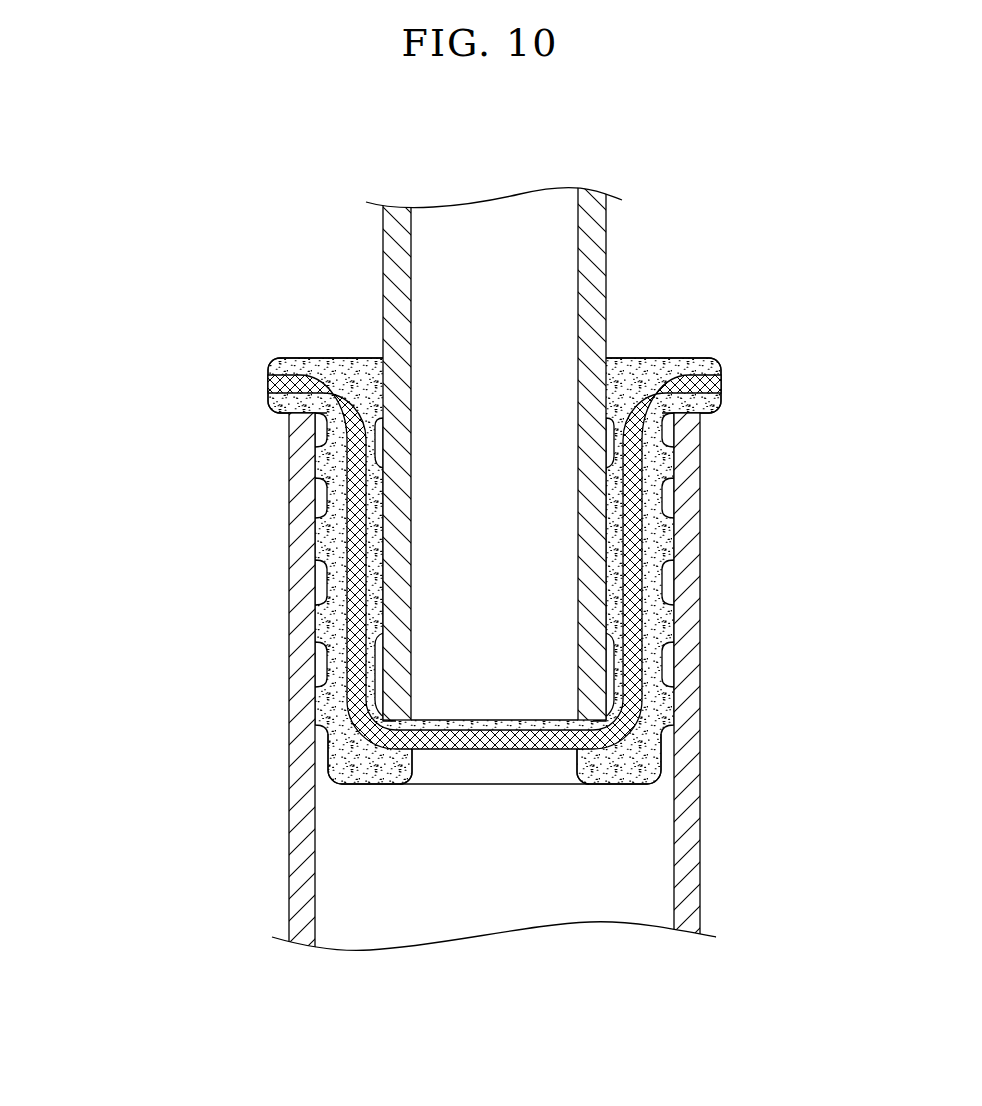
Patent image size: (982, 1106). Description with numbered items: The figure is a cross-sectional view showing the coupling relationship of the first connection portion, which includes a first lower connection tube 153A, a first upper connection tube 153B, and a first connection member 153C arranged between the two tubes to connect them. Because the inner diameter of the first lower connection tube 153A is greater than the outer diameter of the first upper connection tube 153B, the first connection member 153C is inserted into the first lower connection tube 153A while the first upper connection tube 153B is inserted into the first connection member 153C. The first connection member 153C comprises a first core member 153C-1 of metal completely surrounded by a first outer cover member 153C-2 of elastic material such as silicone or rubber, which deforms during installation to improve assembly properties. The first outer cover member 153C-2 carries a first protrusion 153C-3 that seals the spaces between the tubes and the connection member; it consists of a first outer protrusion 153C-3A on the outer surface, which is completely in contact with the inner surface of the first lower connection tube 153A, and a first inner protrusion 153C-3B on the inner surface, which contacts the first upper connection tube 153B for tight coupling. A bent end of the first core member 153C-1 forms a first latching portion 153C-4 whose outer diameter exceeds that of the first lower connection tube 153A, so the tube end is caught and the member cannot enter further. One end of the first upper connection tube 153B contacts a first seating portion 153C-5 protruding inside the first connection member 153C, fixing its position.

The first lower connection tube 153A is at (690, 580).
The first upper connection tube 153B is at (602, 243).
The first connection member 153C is at (437, 534).
The first core member 153C-1 is at (270, 385).
The first outer cover member 153C-2 is at (322, 578).
The first protrusion 153C-3 is at (365, 567).
The first outer protrusion 153C-3A is at (318, 468).
The first inner protrusion 153C-3B is at (378, 527).
The first latching portion 153C-4 is at (312, 358).
The first seating portion 153C-5 is at (340, 700).